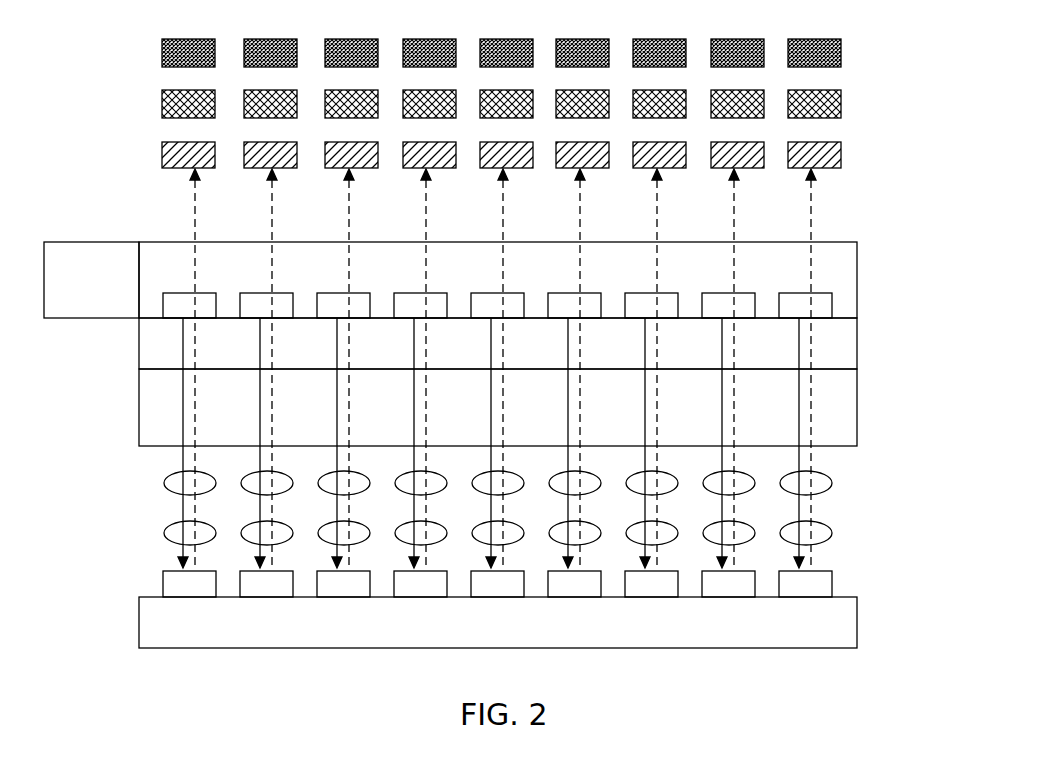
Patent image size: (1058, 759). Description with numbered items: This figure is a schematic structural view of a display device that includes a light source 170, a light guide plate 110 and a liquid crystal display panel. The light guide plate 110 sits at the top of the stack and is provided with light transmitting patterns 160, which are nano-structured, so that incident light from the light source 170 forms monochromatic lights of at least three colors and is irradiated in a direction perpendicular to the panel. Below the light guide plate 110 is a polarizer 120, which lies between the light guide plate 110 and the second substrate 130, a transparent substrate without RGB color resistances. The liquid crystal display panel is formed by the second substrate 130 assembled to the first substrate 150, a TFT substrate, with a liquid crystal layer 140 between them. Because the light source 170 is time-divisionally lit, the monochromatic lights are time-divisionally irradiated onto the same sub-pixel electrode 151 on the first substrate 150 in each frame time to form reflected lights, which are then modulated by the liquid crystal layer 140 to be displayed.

The light guide plate 110 is at (549, 259).
The light transmitting patterns 160 is at (561, 287).
The polarizer 120 is at (549, 338).
The second substrate 130 is at (549, 404).
The liquid crystal layer 140 is at (562, 495).
The sub-pixel electrode 151 is at (561, 558).
The first substrate 150 is at (549, 608).
The light source 170 is at (91, 280).